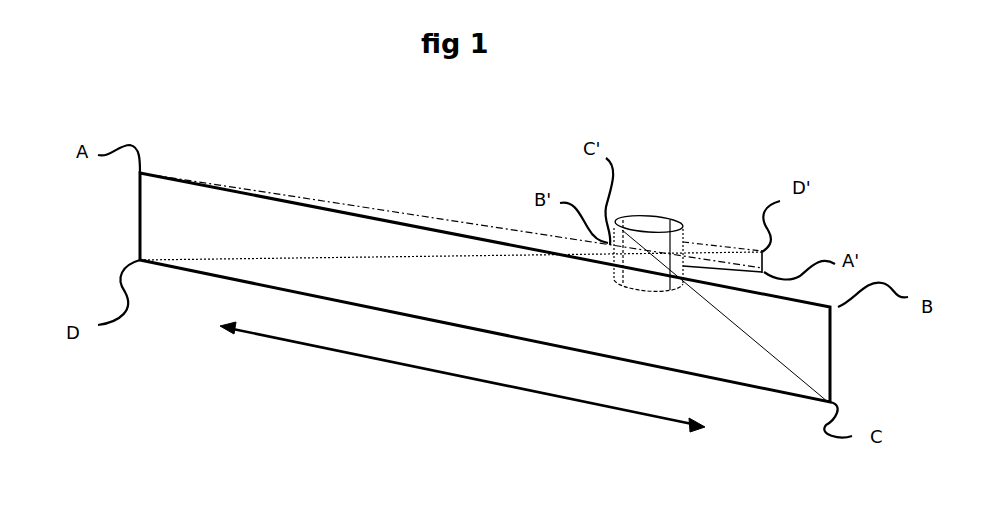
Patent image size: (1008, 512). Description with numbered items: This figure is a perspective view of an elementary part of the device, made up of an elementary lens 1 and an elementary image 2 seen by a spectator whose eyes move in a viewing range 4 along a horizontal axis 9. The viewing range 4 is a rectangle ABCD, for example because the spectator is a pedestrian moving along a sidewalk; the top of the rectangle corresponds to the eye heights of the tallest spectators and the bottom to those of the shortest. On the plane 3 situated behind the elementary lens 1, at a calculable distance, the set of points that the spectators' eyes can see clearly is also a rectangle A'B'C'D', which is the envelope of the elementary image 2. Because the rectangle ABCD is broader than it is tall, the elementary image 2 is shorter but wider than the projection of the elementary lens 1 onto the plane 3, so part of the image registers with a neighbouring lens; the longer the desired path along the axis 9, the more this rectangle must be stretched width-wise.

The elementary lens 1 is at (655, 223).
The elementary image 2 is at (698, 243).
The plane 3 is at (762, 260).
The viewing range 4 is at (272, 222).
The horizontal axis 9 is at (458, 378).